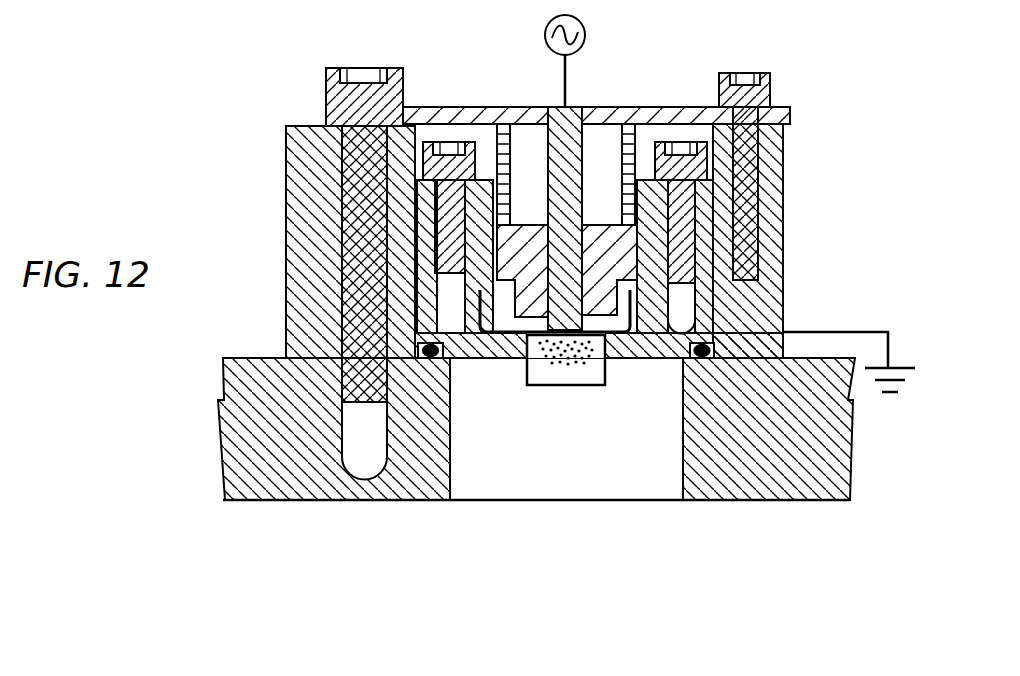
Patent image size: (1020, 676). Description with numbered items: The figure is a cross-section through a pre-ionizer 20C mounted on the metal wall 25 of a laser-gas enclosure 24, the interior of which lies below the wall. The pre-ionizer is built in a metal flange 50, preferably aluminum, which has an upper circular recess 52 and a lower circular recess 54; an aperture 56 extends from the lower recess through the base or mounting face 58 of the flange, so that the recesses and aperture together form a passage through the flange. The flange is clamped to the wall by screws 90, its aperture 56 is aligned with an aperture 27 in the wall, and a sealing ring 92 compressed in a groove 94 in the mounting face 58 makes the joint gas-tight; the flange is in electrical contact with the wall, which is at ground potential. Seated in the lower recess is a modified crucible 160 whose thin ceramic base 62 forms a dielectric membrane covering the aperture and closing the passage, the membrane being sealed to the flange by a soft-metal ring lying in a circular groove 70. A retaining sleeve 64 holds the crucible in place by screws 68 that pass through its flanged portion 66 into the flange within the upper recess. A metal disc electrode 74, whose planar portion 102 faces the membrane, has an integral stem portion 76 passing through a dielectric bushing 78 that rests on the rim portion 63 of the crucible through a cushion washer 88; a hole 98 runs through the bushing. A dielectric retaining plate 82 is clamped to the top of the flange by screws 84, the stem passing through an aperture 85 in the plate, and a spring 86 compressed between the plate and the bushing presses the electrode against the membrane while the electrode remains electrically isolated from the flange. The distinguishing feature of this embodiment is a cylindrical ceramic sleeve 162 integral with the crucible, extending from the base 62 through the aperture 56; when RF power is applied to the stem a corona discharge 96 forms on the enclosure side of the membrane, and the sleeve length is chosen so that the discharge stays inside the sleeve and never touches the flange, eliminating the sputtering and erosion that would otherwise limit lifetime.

The pre-ionizer 20C is at (216, 211).
The laser-gas enclosure 24 is at (556, 574).
The metal wall 25 is at (308, 503).
The aperture 27 is at (597, 470).
The flange 50 is at (280, 307).
The upper circular recess 52 is at (413, 153).
The lower circular recess 54 is at (745, 262).
The aperture 56 is at (530, 360).
The base or mounting face 58 is at (775, 328).
The base 62 is at (515, 345).
The rim portion 63 is at (465, 330).
The retaining sleeve 64 is at (468, 268).
The flanged portion 66 is at (417, 202).
The screws 68 is at (705, 165).
The circular groove 70 is at (505, 345).
The electrode 74 is at (535, 300).
The stem portion 76 is at (567, 110).
The bushing 78 is at (478, 252).
The retaining plate 82 is at (798, 113).
The screws 84 is at (770, 82).
The aperture 85 is at (541, 106).
The spring 86 is at (483, 133).
The cushion washer 88 is at (495, 292).
The screws 90 is at (326, 92).
The sealing ring 92 is at (703, 357).
The groove 94 is at (757, 358).
The corona discharge 96 is at (592, 365).
The hole 98 is at (592, 225).
The planar portion 102 is at (652, 333).
The crucible 160 is at (660, 345).
The cylindrical ceramic sleeve 162 is at (530, 385).